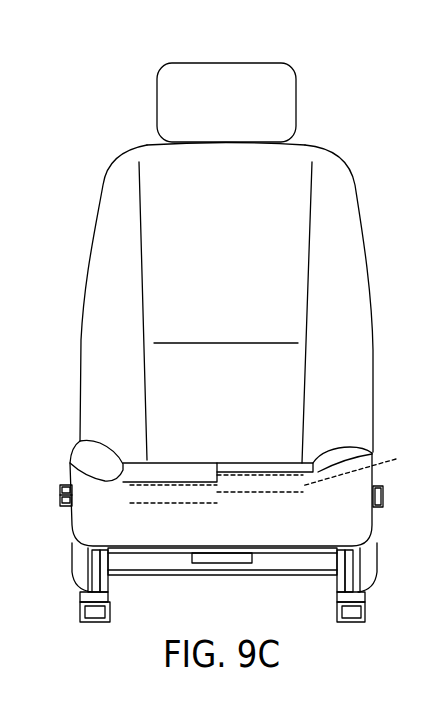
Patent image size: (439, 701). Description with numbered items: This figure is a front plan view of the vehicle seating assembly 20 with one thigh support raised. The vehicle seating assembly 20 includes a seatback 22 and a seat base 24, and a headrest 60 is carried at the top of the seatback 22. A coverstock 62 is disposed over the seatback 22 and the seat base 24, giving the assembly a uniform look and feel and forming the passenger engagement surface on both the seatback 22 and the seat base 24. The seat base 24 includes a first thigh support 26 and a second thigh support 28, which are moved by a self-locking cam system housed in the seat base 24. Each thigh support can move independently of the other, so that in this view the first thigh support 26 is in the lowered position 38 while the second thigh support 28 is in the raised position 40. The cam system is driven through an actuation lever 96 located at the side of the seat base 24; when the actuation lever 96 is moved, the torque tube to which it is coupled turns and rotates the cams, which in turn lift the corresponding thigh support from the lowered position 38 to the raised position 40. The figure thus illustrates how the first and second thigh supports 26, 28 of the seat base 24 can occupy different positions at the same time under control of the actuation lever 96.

The vehicle seating assembly 20 is at (324, 122).
The seatback 22 is at (287, 230).
The seat base 24 is at (277, 463).
The first thigh support 26 is at (127, 493).
The second thigh support 28 is at (357, 460).
The lowered position 38 is at (172, 514).
The raised position 40 is at (261, 511).
The headrest 60 is at (270, 73).
The coverstock 62 is at (238, 246).
The actuation lever 96 is at (63, 484).